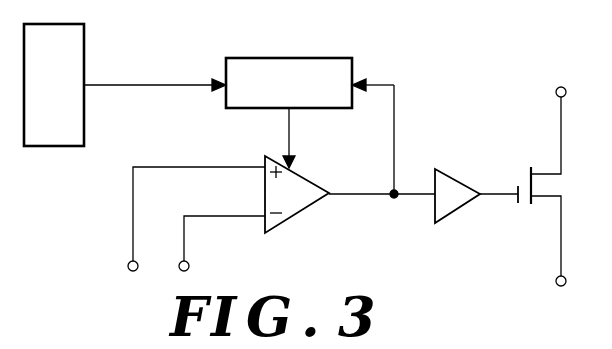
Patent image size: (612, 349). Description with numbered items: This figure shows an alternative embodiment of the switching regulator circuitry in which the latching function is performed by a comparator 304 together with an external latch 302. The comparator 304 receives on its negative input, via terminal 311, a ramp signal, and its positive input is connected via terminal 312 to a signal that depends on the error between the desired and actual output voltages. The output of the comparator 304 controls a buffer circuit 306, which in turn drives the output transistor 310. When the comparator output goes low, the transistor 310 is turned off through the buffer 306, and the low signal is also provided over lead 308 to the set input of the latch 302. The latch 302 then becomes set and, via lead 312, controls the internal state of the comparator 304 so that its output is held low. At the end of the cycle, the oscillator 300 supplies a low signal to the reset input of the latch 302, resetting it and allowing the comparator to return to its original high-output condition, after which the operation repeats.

The oscillator 300 is at (78, 36).
The latch 302 is at (278, 58).
The comparator 304 is at (300, 204).
The buffer circuit 306 is at (447, 175).
The lead 308 is at (394, 119).
The output transistor 310 is at (553, 185).
The terminal 311 is at (184, 247).
The lead 312 is at (289, 127).